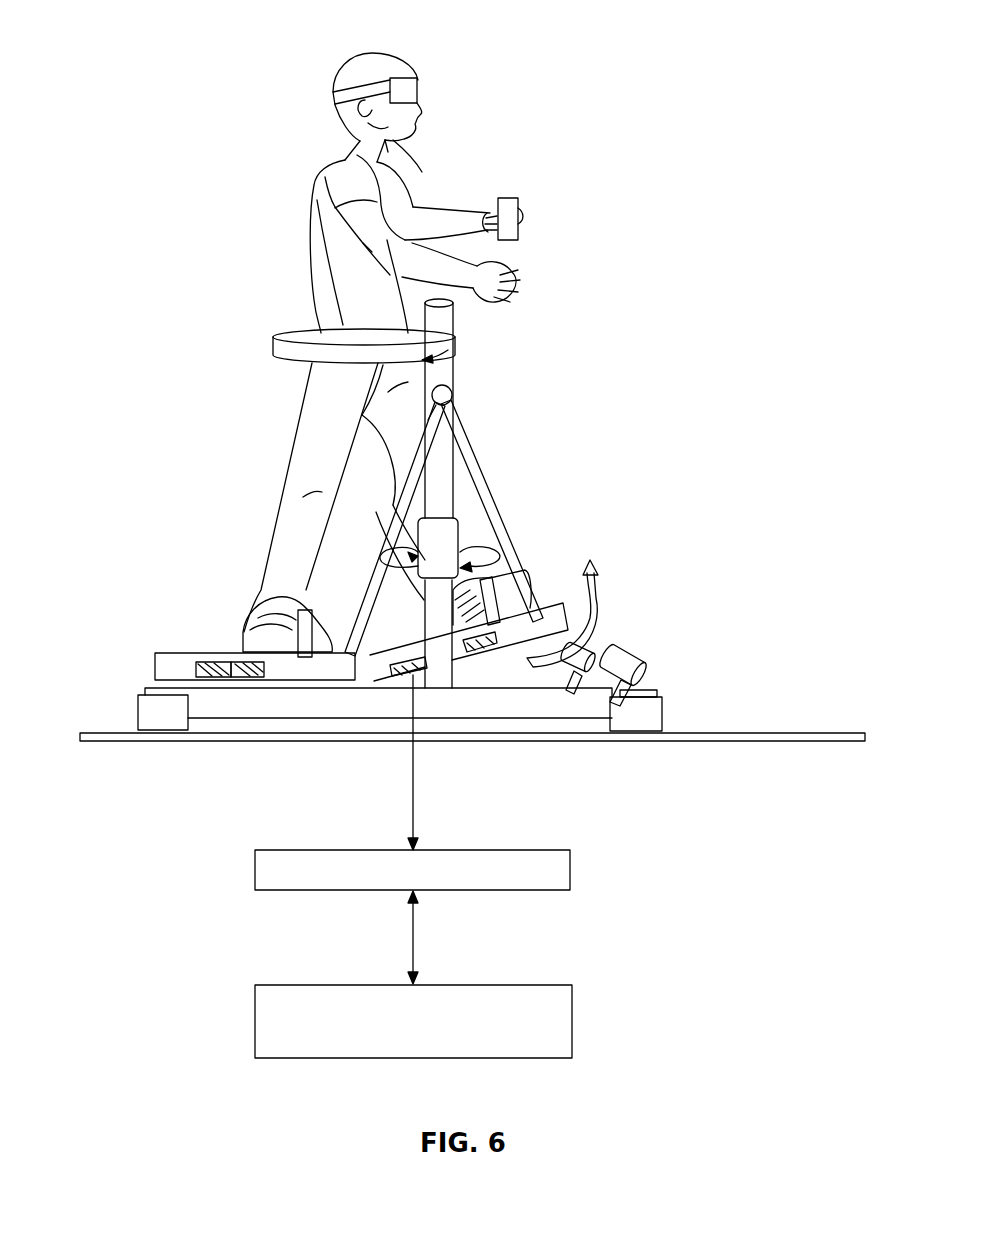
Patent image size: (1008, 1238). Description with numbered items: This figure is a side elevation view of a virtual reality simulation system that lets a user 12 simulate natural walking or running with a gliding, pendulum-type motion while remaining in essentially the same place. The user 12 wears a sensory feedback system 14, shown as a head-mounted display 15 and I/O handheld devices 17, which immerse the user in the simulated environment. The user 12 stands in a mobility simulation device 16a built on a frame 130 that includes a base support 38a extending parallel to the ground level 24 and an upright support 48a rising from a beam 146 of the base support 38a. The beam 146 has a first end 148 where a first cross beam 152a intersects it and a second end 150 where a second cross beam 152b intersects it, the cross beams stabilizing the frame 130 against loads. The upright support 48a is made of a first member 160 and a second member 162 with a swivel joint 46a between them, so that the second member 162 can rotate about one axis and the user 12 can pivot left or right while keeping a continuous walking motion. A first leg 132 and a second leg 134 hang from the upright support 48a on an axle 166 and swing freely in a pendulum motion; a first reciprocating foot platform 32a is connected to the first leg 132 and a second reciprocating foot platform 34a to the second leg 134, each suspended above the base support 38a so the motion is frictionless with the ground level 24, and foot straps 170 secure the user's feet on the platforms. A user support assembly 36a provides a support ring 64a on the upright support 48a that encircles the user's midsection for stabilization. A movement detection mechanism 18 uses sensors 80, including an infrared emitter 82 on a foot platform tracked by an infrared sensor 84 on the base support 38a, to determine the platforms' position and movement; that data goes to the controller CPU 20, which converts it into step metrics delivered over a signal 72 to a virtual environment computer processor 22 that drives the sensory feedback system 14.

The sensory feedback system 14 is at (428, 50).
The head-mounted display 15 is at (417, 95).
The user 12 is at (395, 178).
The I/O handheld device 17 is at (508, 198).
The support ring 64a is at (275, 345).
The user support assembly 36a is at (455, 333).
The upright support 48a is at (456, 374).
The axle 166 is at (450, 393).
The second member 162 is at (453, 437).
The first leg 132 is at (395, 503).
The second leg 134 is at (458, 454).
The mobility simulation device 16a is at (502, 492).
The first member 160 is at (485, 637).
The swivel joint 46a is at (468, 528).
The foot strap 170 is at (277, 603).
The first reciprocating foot platform 32a is at (337, 650).
The second reciprocating foot platform 34a is at (597, 592).
The infrared sensor 84 is at (585, 650).
The infrared emitter 82 is at (217, 672).
The second end 150 is at (147, 690).
The base support 38a is at (138, 698).
The second cross beam 152b is at (138, 728).
The sensor 80 is at (250, 676).
The movement detection mechanism 18 is at (258, 688).
The beam 146 is at (358, 702).
The frame 130 is at (486, 703).
The first end 148 is at (650, 684).
The first cross beam 152a is at (652, 728).
The ground level 24 is at (822, 732).
The controller CPU 20 is at (255, 870).
The signal 72 is at (415, 937).
The virtual environment computer processor 22 is at (255, 1022).